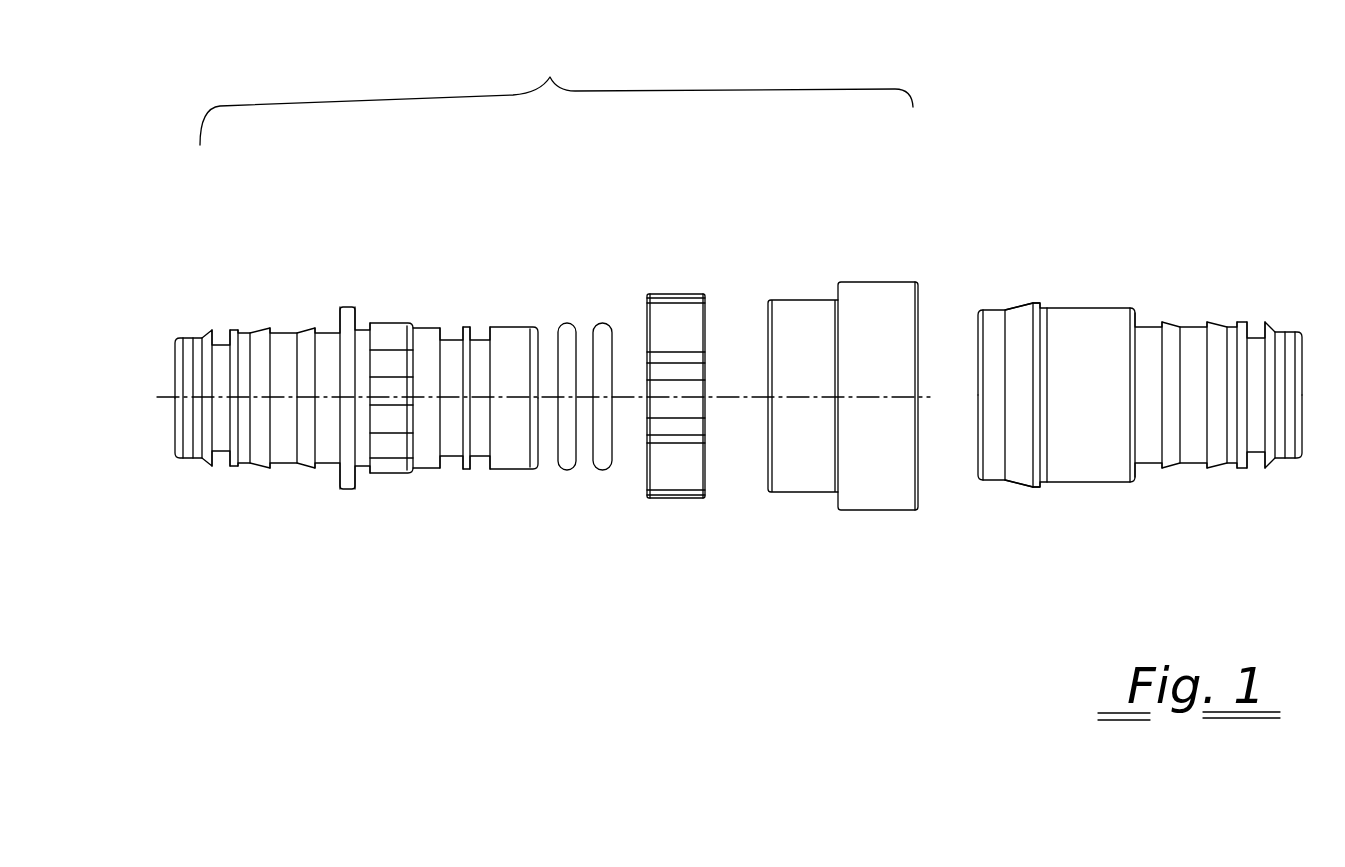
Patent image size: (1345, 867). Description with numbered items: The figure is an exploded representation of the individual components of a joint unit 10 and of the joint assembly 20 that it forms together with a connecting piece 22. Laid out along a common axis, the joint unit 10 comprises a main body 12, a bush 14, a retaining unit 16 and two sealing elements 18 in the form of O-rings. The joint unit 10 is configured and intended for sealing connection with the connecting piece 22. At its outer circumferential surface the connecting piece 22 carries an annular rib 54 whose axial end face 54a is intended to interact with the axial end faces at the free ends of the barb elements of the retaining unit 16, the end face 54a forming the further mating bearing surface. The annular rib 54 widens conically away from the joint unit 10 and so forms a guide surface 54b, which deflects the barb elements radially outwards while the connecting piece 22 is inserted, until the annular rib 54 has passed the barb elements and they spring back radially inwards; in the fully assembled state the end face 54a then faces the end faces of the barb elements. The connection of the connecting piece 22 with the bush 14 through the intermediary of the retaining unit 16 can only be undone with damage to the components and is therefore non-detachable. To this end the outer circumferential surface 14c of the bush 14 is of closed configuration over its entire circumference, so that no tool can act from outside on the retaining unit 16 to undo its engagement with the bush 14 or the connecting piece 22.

The joint unit 10 is at (556, 86).
The main body 12 is at (354, 528).
The bush 14 is at (843, 428).
The outer circumferential surface of the bush 14c is at (801, 347).
The retaining unit 16 is at (677, 512).
The sealing elements 18 is at (602, 479).
The joint assembly 20 is at (1228, 94).
The connecting piece 22 is at (1133, 411).
The annular rib 54 is at (1020, 323).
The axial end face of the annular rib 54a is at (1041, 305).
The guide surface 54b is at (1019, 446).